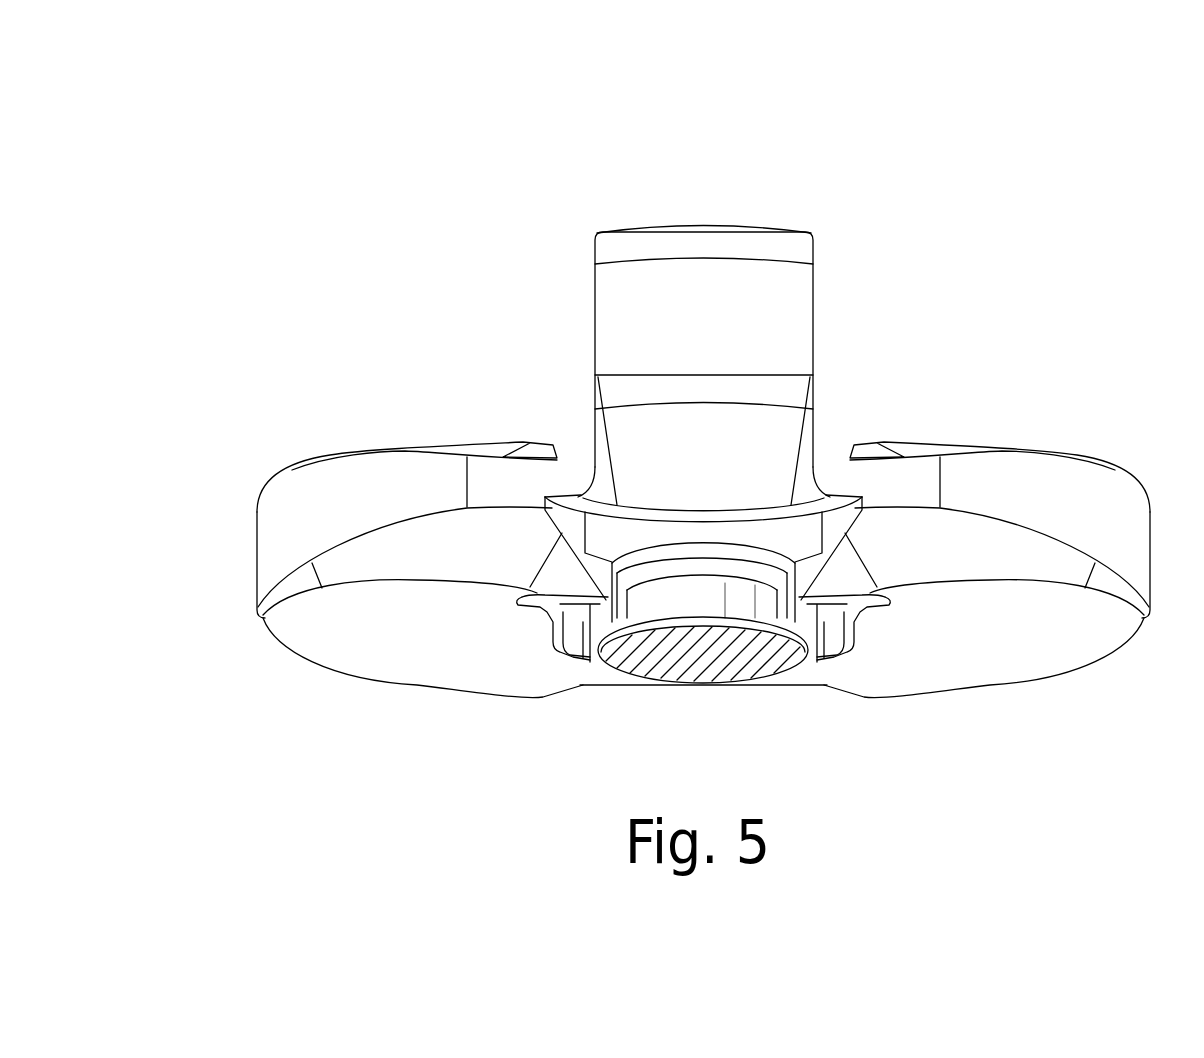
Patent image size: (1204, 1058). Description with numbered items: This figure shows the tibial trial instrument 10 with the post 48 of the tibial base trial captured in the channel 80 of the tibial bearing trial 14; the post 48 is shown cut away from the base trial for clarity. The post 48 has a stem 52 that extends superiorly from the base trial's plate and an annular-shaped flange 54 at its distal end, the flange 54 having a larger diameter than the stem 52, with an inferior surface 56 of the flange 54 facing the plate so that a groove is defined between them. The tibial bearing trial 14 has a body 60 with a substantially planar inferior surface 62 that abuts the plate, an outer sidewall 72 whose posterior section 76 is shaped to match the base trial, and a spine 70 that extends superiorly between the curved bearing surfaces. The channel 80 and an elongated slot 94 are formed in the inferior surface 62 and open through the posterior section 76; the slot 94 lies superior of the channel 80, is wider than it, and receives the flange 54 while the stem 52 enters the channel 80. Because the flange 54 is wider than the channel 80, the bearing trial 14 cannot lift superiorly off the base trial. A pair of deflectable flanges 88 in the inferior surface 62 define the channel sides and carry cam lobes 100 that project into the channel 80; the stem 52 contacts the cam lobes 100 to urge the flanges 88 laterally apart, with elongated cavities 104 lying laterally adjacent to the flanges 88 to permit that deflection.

The fastener assembly 10 is at (936, 163).
The tibial bearing trial 14 is at (906, 272).
The post 48 is at (685, 602).
The stem 52 is at (660, 602).
The annular-shaped flange 54 is at (740, 558).
The inferior surface of the flange 56 is at (648, 577).
The body 60 is at (1137, 540).
The inferior surface 62 is at (1067, 647).
The spine 70 is at (777, 240).
The outer sidewall 72 is at (268, 552).
The posterior section 76 is at (988, 475).
The channel 80 is at (710, 614).
The deflectable flanges 88 is at (584, 661).
The elongated slot 94 is at (598, 528).
The cam lobes 100 is at (567, 660).
The elongated cavities 104 is at (558, 612).